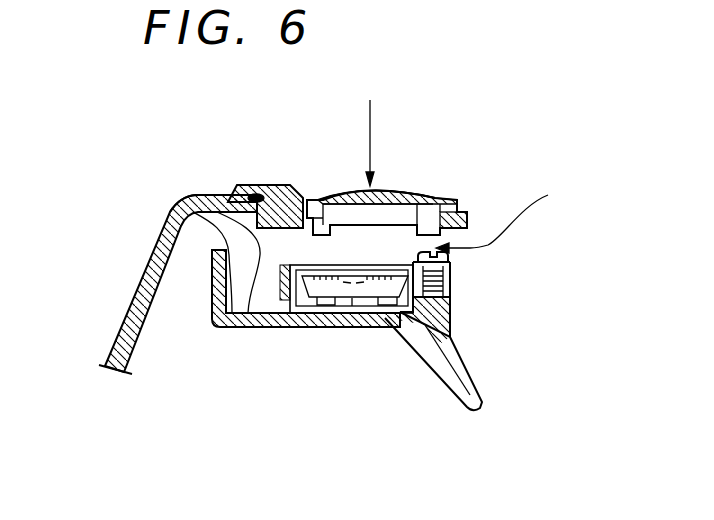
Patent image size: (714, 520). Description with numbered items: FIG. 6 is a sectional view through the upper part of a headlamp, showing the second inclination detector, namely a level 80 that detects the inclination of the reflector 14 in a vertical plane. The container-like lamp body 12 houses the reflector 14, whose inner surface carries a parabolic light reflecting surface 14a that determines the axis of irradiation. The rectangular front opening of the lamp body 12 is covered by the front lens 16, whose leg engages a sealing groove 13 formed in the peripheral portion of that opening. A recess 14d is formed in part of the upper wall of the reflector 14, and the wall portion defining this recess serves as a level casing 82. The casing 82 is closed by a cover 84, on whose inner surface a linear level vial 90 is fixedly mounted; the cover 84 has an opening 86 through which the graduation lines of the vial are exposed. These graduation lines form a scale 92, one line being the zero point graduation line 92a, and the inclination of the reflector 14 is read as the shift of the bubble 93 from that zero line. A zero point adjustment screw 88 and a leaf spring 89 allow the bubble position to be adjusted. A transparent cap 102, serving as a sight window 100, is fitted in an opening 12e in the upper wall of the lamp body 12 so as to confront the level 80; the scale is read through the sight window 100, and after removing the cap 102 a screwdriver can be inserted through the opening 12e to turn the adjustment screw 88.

The lamp body 12 is at (472, 220).
The opening 12e is at (352, 200).
The sealing groove 13 is at (247, 185).
The reflector 14 is at (478, 385).
The light reflecting surface 14a is at (456, 388).
The recess 14d is at (184, 197).
The front lens 16 is at (118, 315).
The second inclination detector 80 is at (506, 216).
The level casing 82 is at (208, 206).
The cover 84 is at (448, 266).
The opening 86 is at (283, 198).
The zero point adjustment screw 88 is at (448, 257).
The leaf spring 89 is at (447, 272).
The level vial 90 is at (350, 311).
The scale 92 is at (427, 194).
The zero point graduation line 92a is at (390, 196).
The bubble 93 is at (368, 303).
The sight window 100 is at (378, 132).
The transparent cap 102 is at (425, 194).